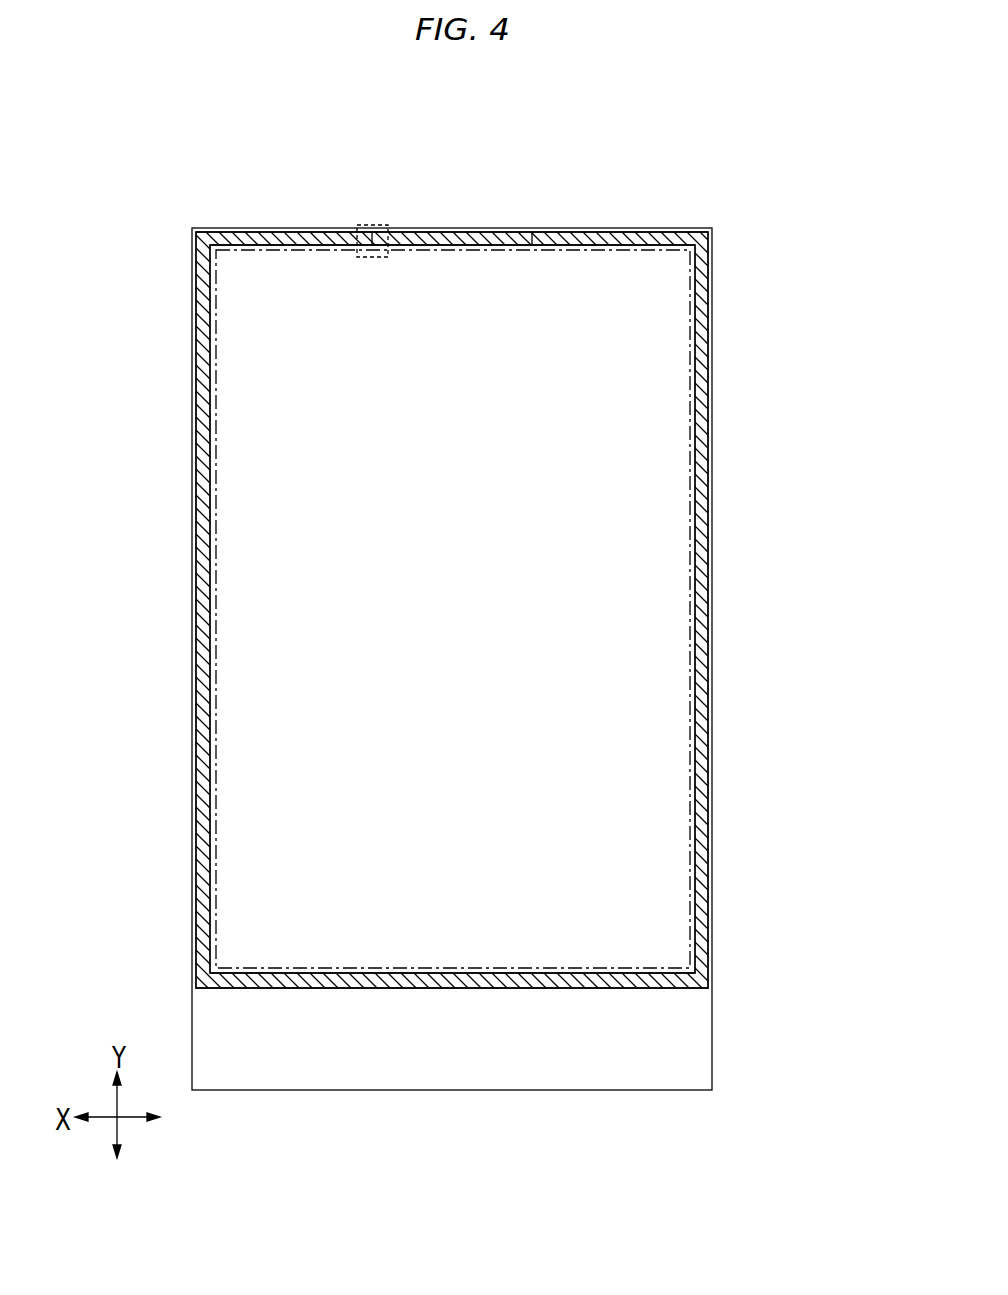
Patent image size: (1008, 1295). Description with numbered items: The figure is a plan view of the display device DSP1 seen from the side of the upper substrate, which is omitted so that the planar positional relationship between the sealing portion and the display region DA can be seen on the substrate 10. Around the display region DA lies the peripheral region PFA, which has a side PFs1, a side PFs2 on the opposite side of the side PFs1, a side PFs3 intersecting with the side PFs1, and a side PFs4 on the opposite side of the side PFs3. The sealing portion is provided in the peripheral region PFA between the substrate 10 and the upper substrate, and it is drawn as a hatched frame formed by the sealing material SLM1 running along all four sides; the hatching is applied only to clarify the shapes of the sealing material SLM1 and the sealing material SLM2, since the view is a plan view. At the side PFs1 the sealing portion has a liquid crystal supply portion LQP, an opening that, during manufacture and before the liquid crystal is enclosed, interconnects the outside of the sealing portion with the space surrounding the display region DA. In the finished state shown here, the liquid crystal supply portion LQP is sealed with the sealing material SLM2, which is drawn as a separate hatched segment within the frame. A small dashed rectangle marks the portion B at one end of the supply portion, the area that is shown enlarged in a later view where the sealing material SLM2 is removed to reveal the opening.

The substrate 10 is at (601, 1063).
The sealing material SLM1 is at (703, 355).
The sealing material SLM2 is at (443, 252).
The display region DA is at (562, 246).
The portion B is at (372, 258).
The liquid crystal supply portion LQP is at (535, 228).
The peripheral region PFA is at (730, 1088).
The display device DSP1 is at (650, 192).
The side PFs1 is at (333, 216).
The side PFs2 is at (410, 1102).
The side PFs3 is at (180, 434).
The side PFs4 is at (724, 458).